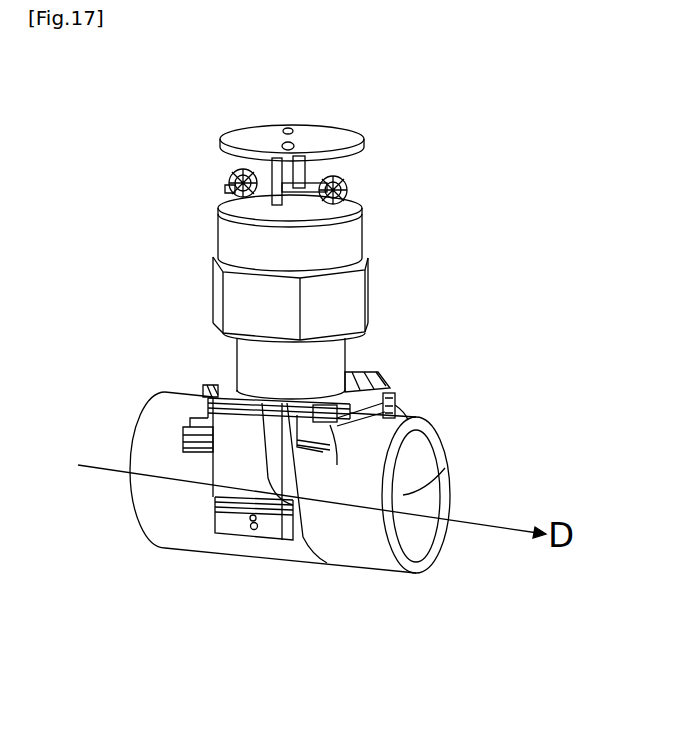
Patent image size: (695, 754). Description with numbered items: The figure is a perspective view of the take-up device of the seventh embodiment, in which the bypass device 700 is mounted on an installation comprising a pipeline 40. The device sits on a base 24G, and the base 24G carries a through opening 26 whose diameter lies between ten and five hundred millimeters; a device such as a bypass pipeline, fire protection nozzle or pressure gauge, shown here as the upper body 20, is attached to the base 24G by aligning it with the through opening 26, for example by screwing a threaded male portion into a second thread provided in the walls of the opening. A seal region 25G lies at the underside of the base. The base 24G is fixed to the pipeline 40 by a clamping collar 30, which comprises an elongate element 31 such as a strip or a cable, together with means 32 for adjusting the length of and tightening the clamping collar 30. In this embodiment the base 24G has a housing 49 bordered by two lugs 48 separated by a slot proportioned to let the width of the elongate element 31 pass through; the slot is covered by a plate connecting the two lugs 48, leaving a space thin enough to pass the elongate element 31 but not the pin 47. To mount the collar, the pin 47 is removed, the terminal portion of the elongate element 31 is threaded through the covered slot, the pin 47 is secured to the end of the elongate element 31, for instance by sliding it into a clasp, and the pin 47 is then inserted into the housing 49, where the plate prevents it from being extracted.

The bypass device 700 is at (320, 107).
The upper housing body 20 is at (352, 252).
The through opening 26 is at (330, 347).
The base 24G is at (355, 367).
The left gasket 25G is at (217, 392).
The clamping collar 30 is at (200, 473).
The lugs 48 is at (195, 403).
The pin 47 is at (393, 395).
The means for adjusting the length and tightening 32 is at (230, 520).
The elongate element 31 is at (243, 547).
The housing 49 is at (282, 540).
The pipeline 40 is at (445, 468).